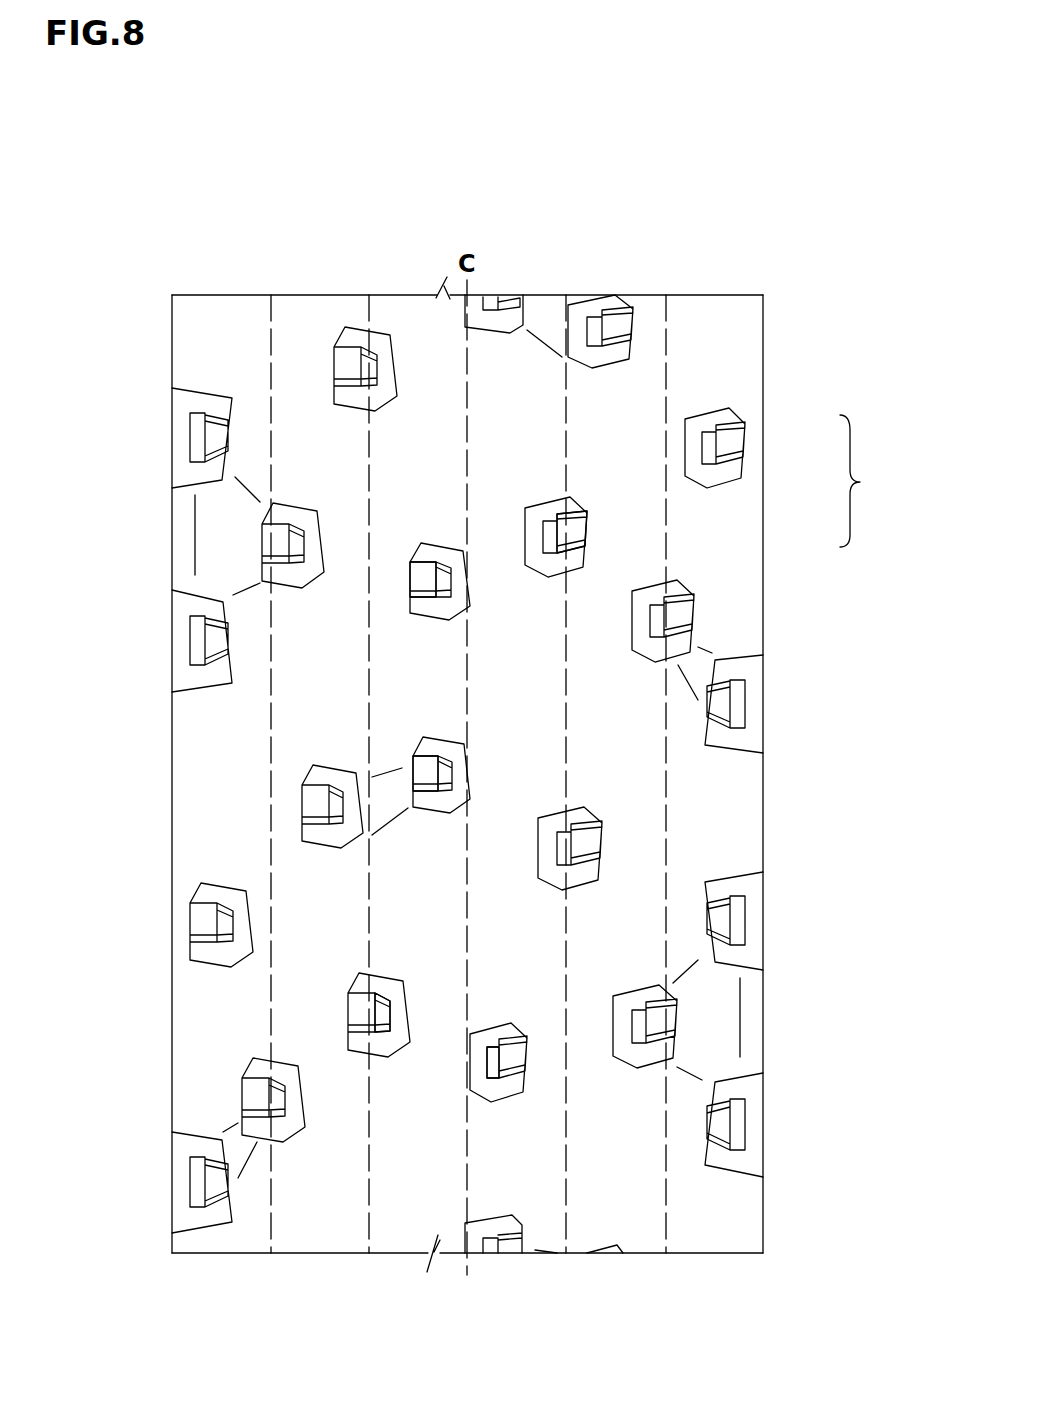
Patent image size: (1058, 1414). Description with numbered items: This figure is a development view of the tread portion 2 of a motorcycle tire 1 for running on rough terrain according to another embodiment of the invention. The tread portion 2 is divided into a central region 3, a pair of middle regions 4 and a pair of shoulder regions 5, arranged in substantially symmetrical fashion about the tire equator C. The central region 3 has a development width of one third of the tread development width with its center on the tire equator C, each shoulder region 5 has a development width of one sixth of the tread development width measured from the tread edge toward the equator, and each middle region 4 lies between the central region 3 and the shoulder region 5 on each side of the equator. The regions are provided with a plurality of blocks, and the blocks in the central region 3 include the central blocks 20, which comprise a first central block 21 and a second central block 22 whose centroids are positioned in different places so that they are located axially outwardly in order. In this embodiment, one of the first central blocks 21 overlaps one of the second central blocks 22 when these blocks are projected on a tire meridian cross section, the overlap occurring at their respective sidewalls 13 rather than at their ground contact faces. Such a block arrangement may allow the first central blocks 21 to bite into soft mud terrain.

The motorcycle tire 1 is at (558, 278).
The tread portion 2 is at (467, 774).
The central region 3 is at (438, 359).
The middle region 4 is at (315, 333).
The shoulder region 5 is at (229, 333).
The sidewall 13 is at (525, 528).
The central block 20 is at (502, 746).
The first central block 21 is at (467, 587).
The second central block 22 is at (586, 510).